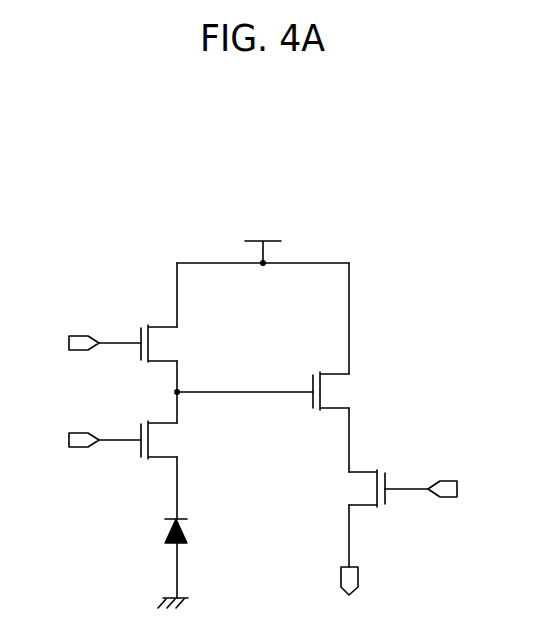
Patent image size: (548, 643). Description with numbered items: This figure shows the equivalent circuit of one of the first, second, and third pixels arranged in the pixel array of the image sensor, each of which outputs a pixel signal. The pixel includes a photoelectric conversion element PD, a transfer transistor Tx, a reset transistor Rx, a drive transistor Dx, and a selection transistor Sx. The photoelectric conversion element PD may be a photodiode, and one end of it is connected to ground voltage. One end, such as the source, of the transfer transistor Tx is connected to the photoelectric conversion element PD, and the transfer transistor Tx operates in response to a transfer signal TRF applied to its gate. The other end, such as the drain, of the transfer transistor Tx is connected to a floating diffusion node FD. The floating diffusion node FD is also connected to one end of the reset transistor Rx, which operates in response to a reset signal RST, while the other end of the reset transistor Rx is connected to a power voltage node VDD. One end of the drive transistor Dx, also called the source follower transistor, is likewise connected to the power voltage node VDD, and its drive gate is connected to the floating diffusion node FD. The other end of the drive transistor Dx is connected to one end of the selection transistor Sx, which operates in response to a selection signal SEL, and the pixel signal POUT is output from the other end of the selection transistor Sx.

The power voltage node VDD is at (263, 238).
The reset signal RST is at (86, 344).
The reset transistor Rx is at (164, 343).
The floating diffusion node FD is at (231, 394).
The transfer signal TRF is at (86, 441).
The transfer transistor Tx is at (164, 440).
The photoelectric conversion element PD is at (189, 531).
The drive transistor Dx is at (337, 391).
The selection transistor Sx is at (365, 488).
The selection signal SEL is at (439, 489).
The pixel signal POUT is at (348, 598).